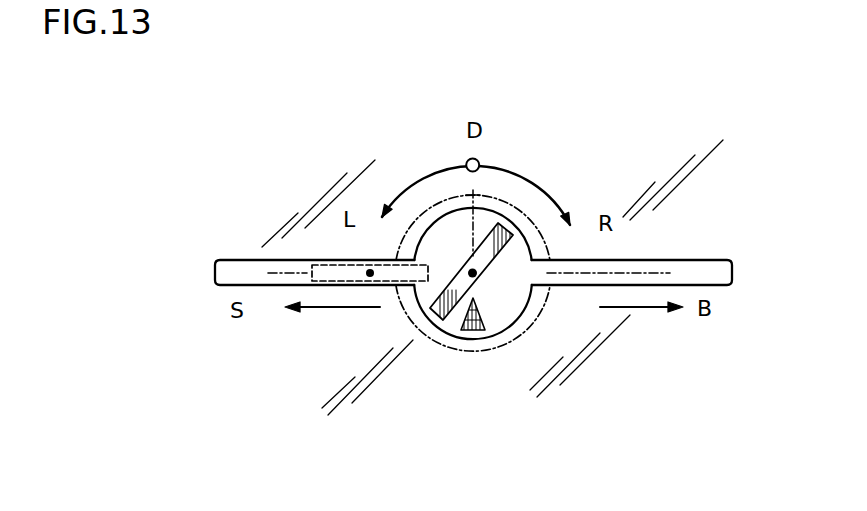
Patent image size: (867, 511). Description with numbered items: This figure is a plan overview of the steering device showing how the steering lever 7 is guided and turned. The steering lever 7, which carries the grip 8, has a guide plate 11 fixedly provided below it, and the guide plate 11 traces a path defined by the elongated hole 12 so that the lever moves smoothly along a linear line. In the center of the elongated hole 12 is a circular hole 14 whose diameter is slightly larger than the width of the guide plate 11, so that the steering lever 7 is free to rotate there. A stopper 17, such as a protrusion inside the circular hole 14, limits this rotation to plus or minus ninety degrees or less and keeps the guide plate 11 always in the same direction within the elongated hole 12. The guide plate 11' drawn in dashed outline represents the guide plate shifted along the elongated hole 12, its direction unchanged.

The steering lever 7 is at (506, 212).
The grip 8 is at (407, 310).
The guide plate 11 is at (429, 220).
The valve flap in alternate position 11' is at (314, 325).
The elongated hole 12 is at (240, 272).
The circular hole 14 is at (508, 301).
The stopper 17 is at (498, 327).